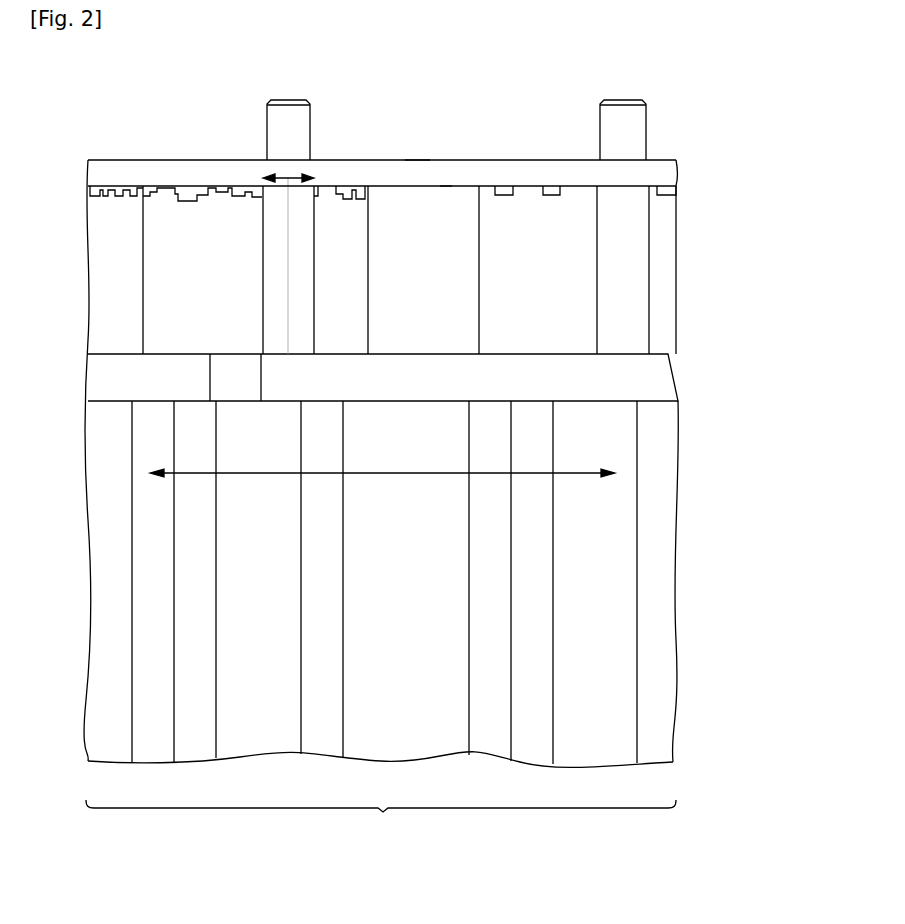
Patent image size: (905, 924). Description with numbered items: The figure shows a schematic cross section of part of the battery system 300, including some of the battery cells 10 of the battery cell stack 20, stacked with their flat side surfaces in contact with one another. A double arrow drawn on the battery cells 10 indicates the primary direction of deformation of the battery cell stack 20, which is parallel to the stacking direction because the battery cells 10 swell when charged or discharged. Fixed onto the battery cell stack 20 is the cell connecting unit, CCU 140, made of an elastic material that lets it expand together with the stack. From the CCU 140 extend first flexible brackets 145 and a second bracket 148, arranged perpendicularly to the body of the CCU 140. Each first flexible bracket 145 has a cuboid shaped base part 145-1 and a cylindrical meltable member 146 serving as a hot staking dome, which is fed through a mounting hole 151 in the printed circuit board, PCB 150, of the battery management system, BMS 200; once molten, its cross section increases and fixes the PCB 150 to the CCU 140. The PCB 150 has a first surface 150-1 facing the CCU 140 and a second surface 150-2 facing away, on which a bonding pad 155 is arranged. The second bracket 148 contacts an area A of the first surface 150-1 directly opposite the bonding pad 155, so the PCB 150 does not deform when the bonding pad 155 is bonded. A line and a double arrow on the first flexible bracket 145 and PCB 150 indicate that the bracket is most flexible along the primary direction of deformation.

The battery system 300 is at (116, 135).
The cell connecting unit 140 is at (656, 378).
The first flexible bracket 145 is at (449, 270).
The base part 145-1 is at (275, 266).
The meltable member 146 is at (286, 107).
The second bracket 148 is at (462, 297).
The printed circuit board 150 is at (413, 169).
The battery management system 200 is at (663, 168).
The first surface 150-1 is at (528, 193).
The second surface 150-2 is at (530, 160).
The mounting hole 151 is at (313, 158).
The bonding pad 155 is at (417, 158).
The area A is at (445, 186).
The battery cell 10 is at (123, 593).
The battery cell stack 20 is at (381, 823).